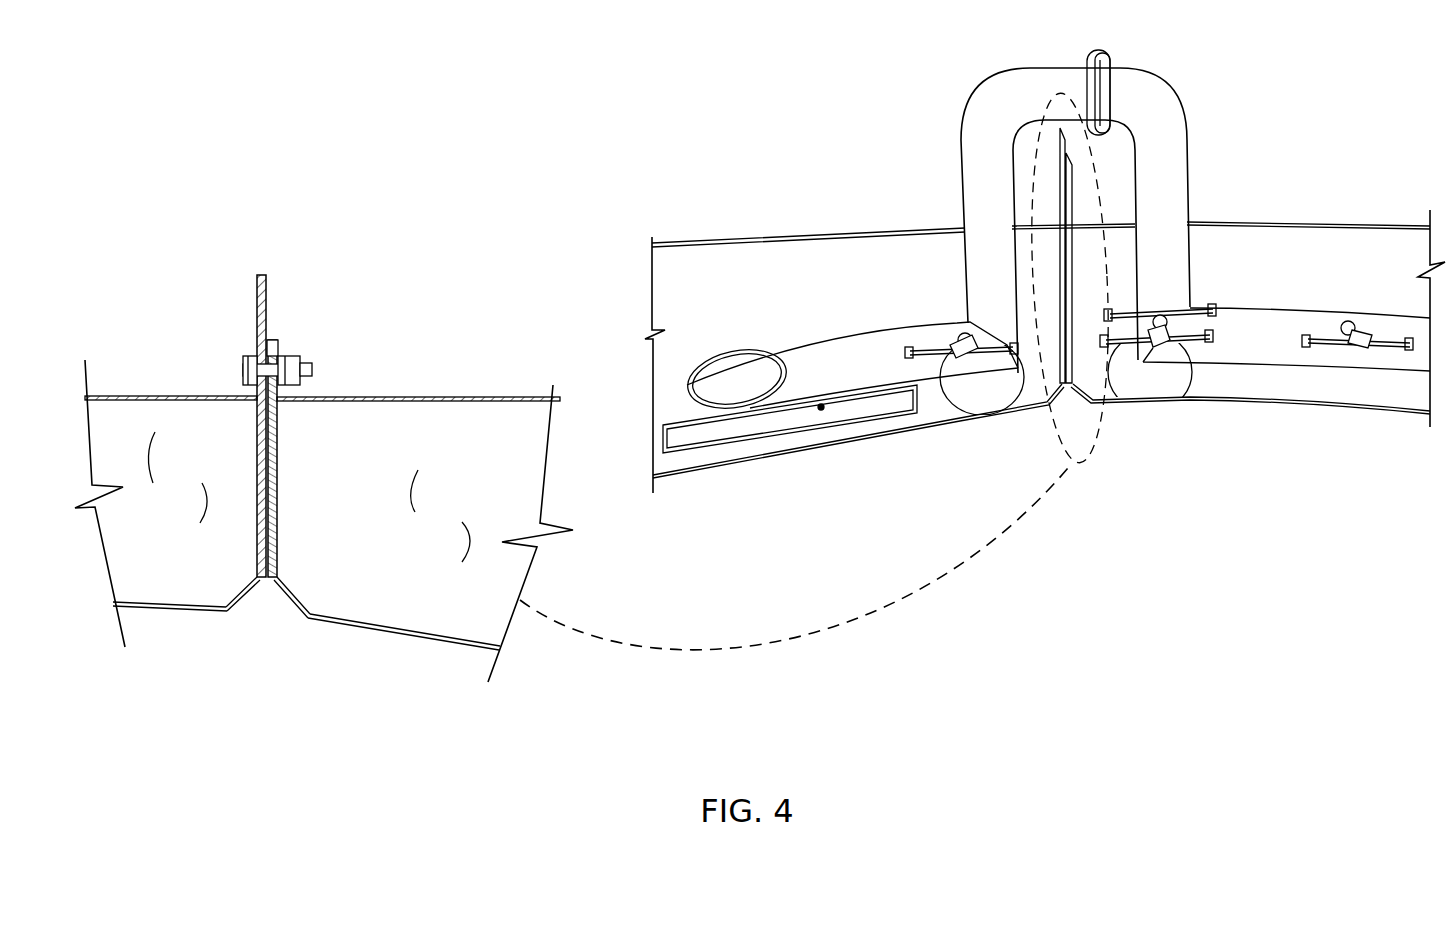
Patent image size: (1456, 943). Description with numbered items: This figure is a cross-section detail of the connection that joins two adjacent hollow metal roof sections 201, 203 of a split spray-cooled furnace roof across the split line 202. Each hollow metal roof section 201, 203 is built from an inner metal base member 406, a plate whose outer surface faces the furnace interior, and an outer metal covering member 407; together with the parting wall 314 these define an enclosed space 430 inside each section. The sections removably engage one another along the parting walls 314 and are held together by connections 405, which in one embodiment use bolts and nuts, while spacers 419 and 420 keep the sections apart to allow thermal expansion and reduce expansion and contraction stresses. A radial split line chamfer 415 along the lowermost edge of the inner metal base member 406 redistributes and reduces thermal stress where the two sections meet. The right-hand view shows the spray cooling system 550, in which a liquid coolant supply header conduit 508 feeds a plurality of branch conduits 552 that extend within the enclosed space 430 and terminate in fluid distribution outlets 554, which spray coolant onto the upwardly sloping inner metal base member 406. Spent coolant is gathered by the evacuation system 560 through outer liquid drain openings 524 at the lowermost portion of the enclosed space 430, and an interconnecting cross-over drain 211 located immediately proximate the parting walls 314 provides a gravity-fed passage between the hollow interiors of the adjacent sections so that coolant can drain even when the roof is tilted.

The hollow metal roof section 201 is at (466, 450).
The split line 202 is at (273, 455).
The hollow metal roof section 203 is at (193, 450).
The interconnecting cross-over drain 211 is at (940, 405).
The parting wall 314 is at (257, 290).
The connection 405 is at (305, 368).
The inner metal base member 406 is at (155, 607).
The outer metal covering member 407 is at (130, 395).
The radial split line chamfer 415 is at (242, 600).
The spacer 419 is at (270, 345).
The spacer 420 is at (273, 525).
The enclosed space 430 is at (309, 497).
The liquid coolant supply header conduit 508 is at (790, 342).
The outer liquid drain opening 524 is at (865, 380).
The spray cooling system 550 is at (900, 295).
The branch conduit 552 is at (960, 333).
The fluid distribution outlet 554 is at (1016, 358).
The evacuation system 560 is at (821, 407).